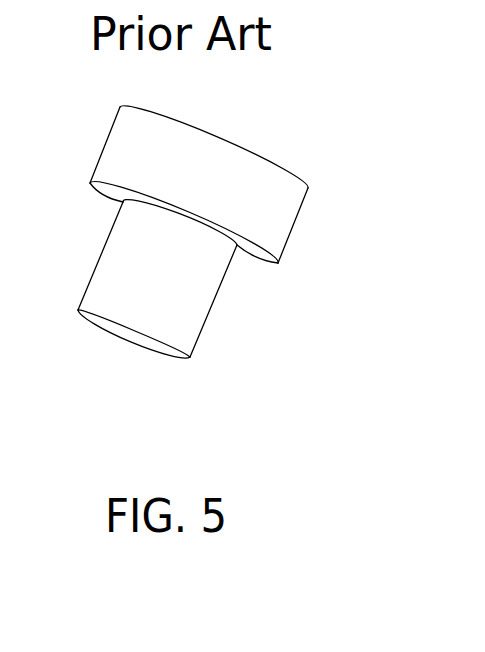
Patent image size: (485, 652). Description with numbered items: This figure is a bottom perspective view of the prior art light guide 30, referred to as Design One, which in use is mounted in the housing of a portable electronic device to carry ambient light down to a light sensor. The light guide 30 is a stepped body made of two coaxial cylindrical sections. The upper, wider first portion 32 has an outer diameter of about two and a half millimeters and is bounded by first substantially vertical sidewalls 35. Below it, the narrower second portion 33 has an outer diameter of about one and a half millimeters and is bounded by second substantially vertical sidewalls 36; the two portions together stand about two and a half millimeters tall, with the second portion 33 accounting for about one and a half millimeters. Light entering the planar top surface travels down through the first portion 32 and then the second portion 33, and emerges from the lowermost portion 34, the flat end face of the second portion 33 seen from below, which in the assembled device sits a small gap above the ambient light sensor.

The light guide 30 is at (305, 127).
The first portion 32 is at (114, 148).
The second portion 33 is at (110, 277).
The lowermost portion 34 is at (130, 330).
The first substantially vertical sidewalls 35 is at (298, 212).
The second substantially vertical sidewalls 36 is at (215, 302).